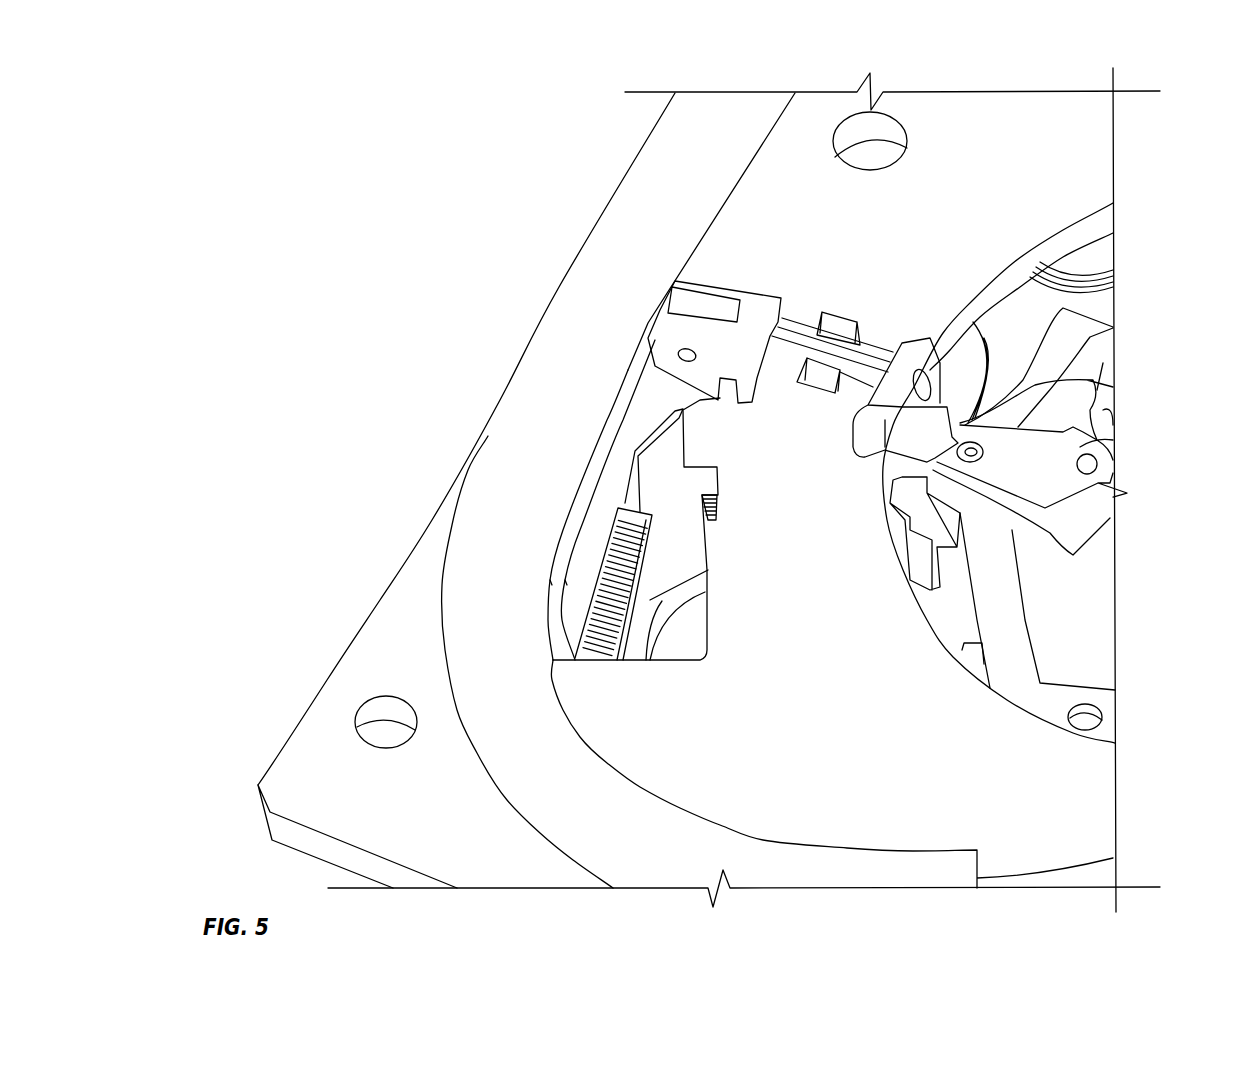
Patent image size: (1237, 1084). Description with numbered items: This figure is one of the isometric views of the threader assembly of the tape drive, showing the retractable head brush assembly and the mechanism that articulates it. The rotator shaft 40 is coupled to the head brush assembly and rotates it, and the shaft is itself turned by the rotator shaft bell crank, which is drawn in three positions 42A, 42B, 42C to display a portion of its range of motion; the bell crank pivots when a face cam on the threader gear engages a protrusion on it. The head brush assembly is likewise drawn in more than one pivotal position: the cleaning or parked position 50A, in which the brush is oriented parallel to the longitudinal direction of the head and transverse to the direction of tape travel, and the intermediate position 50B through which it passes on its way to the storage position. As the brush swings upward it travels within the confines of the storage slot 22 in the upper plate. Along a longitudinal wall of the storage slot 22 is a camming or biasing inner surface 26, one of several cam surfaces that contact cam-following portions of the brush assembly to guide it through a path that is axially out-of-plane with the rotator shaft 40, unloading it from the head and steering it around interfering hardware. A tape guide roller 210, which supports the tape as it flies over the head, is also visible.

The storage slot 22 is at (675, 665).
The inner surface 26 is at (652, 357).
The rotator shaft 40 is at (750, 300).
The rotator shaft bell crank 42A is at (1113, 328).
The rotator shaft bell crank 42B is at (1075, 556).
The rotator shaft bell crank 42C is at (903, 447).
The cleaning position of head brush assembly 50A is at (660, 471).
The intermediate position of head brush assembly 50B is at (578, 568).
The tape guide roller 210 is at (692, 640).